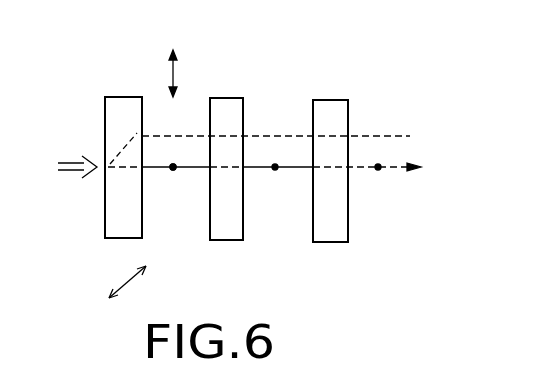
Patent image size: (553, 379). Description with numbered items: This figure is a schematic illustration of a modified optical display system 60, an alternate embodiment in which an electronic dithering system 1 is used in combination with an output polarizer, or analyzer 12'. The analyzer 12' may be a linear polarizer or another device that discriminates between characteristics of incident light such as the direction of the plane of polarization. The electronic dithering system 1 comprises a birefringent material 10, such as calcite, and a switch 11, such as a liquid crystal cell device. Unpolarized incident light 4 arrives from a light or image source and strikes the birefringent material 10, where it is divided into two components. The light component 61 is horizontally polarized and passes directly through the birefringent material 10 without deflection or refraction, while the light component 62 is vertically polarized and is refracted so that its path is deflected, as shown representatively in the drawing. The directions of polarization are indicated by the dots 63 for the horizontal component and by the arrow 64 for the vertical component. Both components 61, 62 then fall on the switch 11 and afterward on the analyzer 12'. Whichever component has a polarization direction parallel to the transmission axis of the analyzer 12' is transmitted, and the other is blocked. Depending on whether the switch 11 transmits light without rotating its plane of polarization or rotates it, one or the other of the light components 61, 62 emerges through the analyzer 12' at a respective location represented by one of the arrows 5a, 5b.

The electronic dithering system 1 is at (297, 86).
The incident light 4 is at (72, 161).
The arrow representing an output location 5a is at (413, 175).
The arrow representing an output location 5b is at (415, 138).
The birefringent material 10 is at (125, 97).
The switch 11 is at (228, 98).
The output polarizer (analyzer) 12' is at (360, 190).
The modified optical display system 60 is at (226, 83).
The horizontally polarized light component 61 is at (126, 168).
The vertically polarized light component 62 is at (126, 147).
The dots 63 is at (175, 168).
The arrow 64 is at (177, 73).